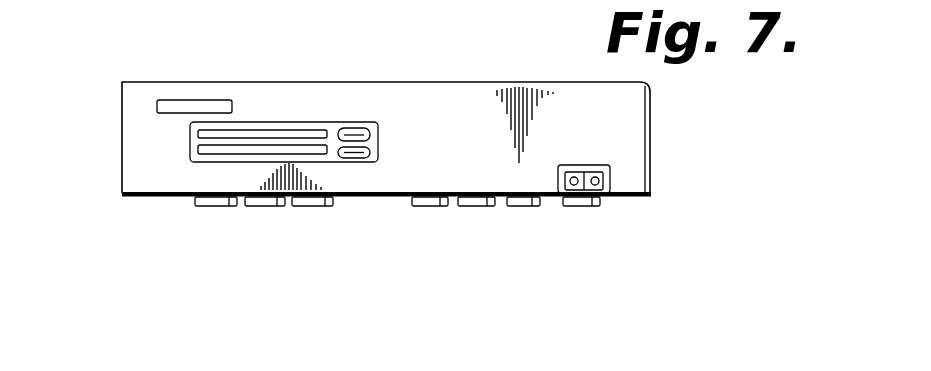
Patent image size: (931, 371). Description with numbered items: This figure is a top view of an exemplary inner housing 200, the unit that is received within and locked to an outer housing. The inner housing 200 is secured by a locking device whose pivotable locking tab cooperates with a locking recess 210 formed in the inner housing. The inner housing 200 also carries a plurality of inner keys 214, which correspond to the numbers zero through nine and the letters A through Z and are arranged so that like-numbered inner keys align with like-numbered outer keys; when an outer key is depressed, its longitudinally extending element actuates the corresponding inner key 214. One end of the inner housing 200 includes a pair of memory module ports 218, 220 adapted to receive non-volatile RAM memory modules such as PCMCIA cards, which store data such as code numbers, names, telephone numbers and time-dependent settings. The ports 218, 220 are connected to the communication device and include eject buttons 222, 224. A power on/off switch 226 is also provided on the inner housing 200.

The inner housing 200 is at (675, 136).
The locking recess 210 is at (180, 106).
The inner keys 214 is at (480, 207).
The memory module port 218 is at (281, 134).
The memory module port 220 is at (222, 149).
The eject button 222 is at (365, 131).
The eject button 224 is at (355, 158).
The power on/off switch 226 is at (610, 178).